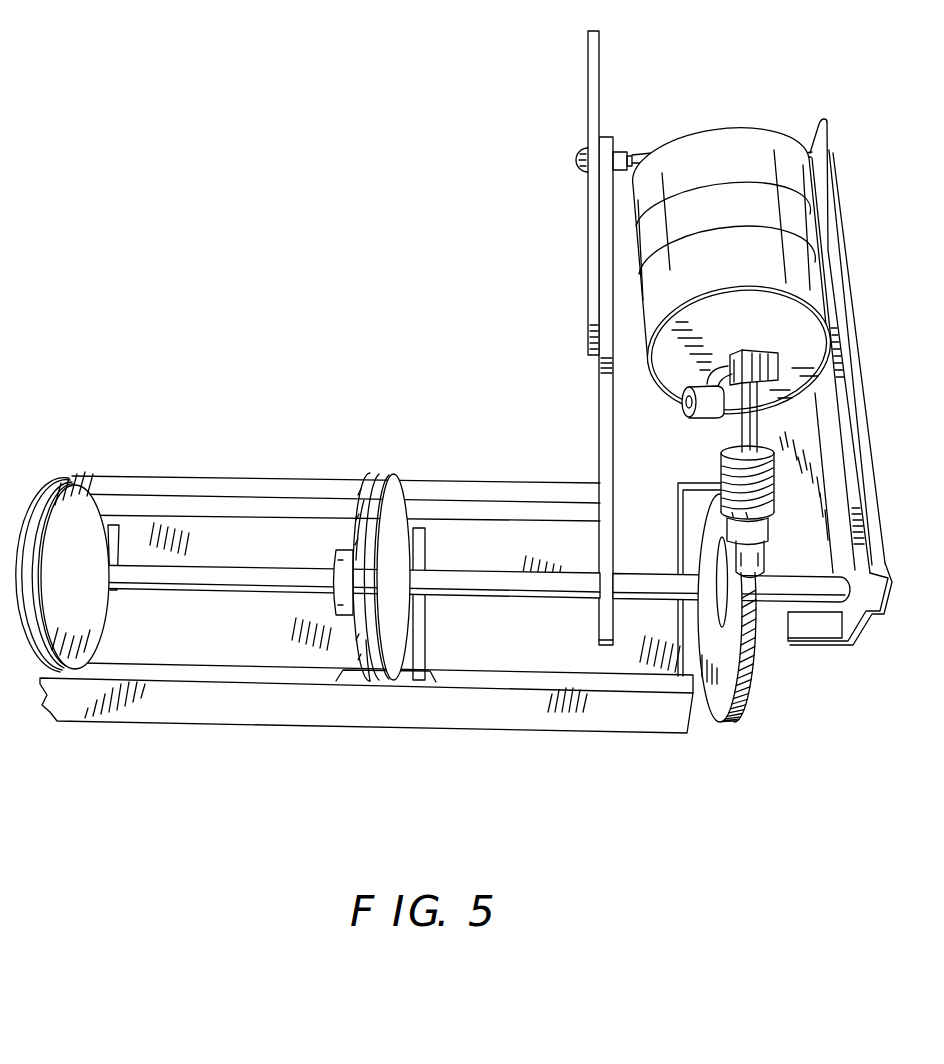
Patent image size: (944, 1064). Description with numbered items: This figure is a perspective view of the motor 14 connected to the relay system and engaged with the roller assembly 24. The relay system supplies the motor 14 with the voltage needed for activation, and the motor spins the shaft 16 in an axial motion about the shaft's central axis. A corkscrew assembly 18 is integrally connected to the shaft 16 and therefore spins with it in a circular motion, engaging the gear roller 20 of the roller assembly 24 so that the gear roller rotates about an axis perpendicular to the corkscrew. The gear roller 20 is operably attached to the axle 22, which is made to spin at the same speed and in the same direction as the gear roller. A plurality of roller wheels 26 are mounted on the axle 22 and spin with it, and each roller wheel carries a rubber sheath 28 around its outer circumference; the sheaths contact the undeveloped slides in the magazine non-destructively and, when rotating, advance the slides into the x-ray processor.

The motor 14 is at (762, 153).
The shaft 16 is at (737, 424).
The corkscrew assembly 18 is at (743, 487).
The gear roller 20 is at (748, 678).
The axle 22 is at (248, 577).
The roller assembly 24 is at (357, 765).
The roller wheels 26 is at (405, 555).
The rubber sheath 28 is at (382, 670).